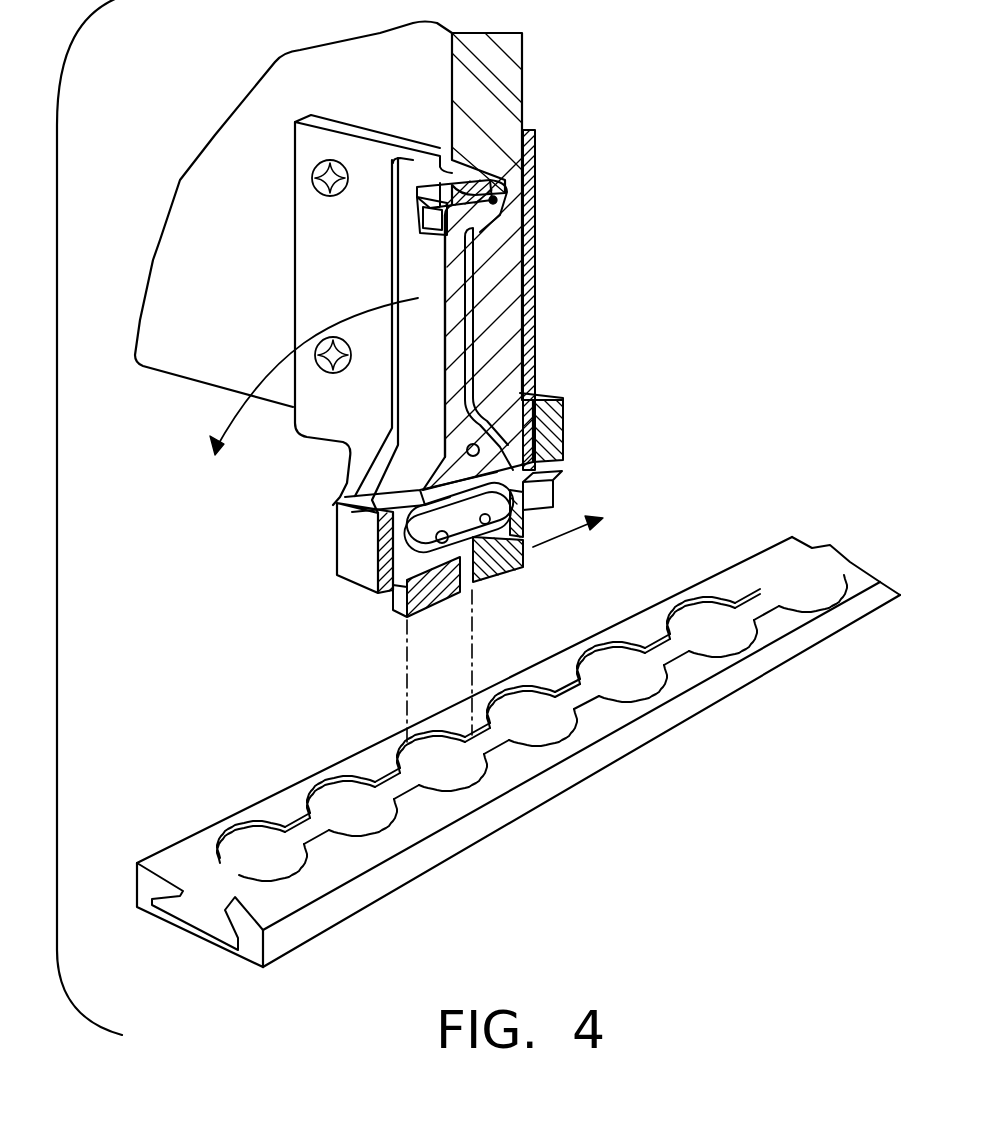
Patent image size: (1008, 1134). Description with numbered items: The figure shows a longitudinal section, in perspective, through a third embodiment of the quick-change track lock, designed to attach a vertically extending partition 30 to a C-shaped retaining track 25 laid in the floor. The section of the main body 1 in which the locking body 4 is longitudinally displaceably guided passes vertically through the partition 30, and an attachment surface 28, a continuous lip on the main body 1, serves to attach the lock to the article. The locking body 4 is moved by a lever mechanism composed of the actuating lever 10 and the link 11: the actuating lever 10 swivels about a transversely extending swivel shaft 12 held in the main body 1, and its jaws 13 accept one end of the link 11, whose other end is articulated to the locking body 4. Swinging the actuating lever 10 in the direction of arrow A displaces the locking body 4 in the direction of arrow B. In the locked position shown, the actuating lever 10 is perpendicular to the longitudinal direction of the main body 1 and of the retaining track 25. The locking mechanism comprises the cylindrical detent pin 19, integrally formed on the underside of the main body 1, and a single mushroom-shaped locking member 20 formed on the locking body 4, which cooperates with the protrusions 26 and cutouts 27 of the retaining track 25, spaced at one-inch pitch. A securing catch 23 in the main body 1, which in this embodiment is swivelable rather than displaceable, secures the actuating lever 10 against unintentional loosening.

The main body 1 is at (507, 190).
The locking body 4 is at (548, 512).
The actuating lever 10 is at (433, 347).
The link 11 is at (427, 530).
The swivel shaft 12 is at (479, 450).
The jaws 13 is at (417, 508).
The detent pin 19 is at (400, 600).
The mushroom-shaped locking member 20 is at (470, 563).
The securing catch 23 is at (497, 198).
The retaining track 25 is at (747, 670).
The protrusions 26 is at (507, 754).
The cutouts 27 is at (663, 697).
The attachment surface 28 is at (310, 138).
The partition 30 is at (222, 190).